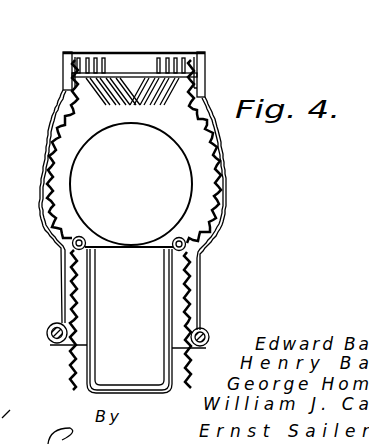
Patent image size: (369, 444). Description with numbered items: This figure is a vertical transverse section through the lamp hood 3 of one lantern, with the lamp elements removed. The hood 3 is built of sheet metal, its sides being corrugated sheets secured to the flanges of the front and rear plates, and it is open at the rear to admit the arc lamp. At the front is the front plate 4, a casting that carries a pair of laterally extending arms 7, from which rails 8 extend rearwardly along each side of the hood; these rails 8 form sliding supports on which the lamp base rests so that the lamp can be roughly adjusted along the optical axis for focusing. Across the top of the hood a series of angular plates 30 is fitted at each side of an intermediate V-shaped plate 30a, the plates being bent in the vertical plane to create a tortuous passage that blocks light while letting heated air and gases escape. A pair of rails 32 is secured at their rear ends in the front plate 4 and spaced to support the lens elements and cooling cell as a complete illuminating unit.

The lamp hood 3 is at (42, 212).
The front plate 4 is at (172, 134).
The laterally extending arms 7 is at (60, 324).
The rails 8 is at (54, 337).
The angular plates 30 is at (174, 96).
The intermediate V-shaped plate 30a is at (132, 101).
The rails 32 is at (86, 239).